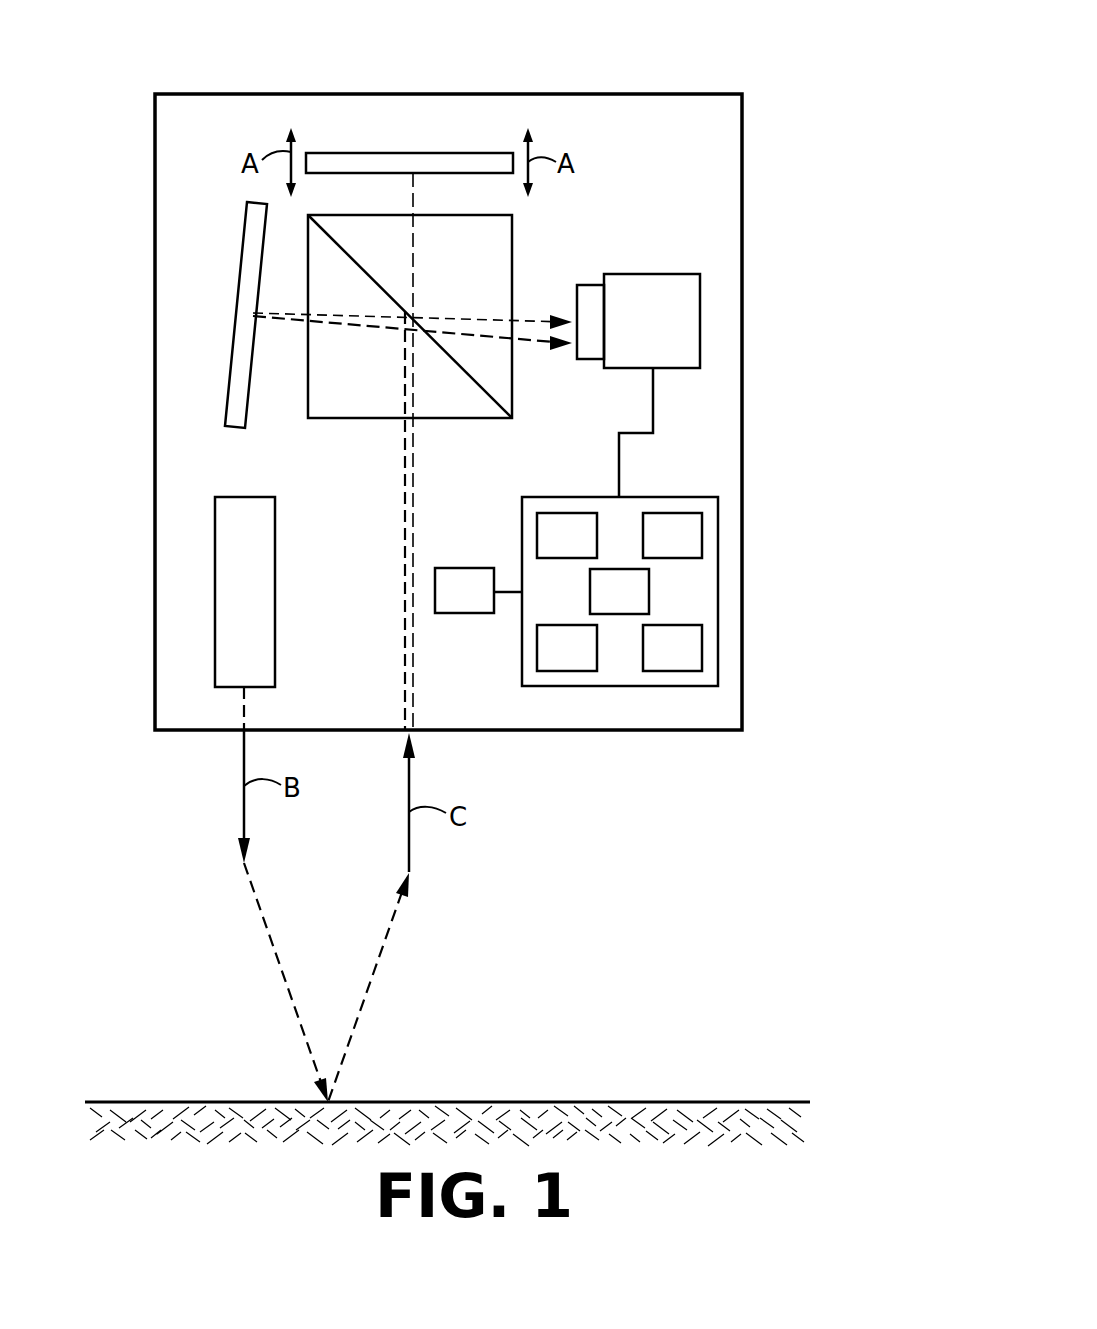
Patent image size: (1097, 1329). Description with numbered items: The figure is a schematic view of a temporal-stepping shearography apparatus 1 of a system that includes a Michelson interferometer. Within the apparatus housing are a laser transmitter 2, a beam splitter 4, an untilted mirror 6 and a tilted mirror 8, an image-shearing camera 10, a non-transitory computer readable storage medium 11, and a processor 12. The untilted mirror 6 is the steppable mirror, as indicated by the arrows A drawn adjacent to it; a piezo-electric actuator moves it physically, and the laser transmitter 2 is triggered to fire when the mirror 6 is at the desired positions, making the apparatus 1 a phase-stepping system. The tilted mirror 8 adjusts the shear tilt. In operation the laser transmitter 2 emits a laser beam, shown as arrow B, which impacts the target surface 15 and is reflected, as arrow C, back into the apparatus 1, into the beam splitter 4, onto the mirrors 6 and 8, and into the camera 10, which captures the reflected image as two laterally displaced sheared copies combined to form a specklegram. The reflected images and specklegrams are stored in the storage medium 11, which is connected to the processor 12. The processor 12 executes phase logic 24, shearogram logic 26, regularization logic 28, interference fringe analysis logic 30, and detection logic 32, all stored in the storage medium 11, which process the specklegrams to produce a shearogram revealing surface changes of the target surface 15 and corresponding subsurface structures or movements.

The temporal-stepping shearography apparatus 1 is at (626, 65).
The laser transmitter 2 is at (275, 587).
The beam splitter 4 is at (358, 419).
The untilted mirror 6 is at (381, 153).
The tilted mirror 8 is at (245, 243).
The image-shearing camera 10 is at (642, 273).
The non-transitory computer readable storage medium 11 is at (478, 590).
The processor 12 is at (598, 561).
The target surface 15 is at (632, 1102).
The phase logic 24 is at (567, 648).
The shearogram logic 26 is at (672, 648).
The regularization logic 28 is at (619, 591).
The interference fringe analysis logic 30 is at (567, 535).
The detection logic 32 is at (672, 535).